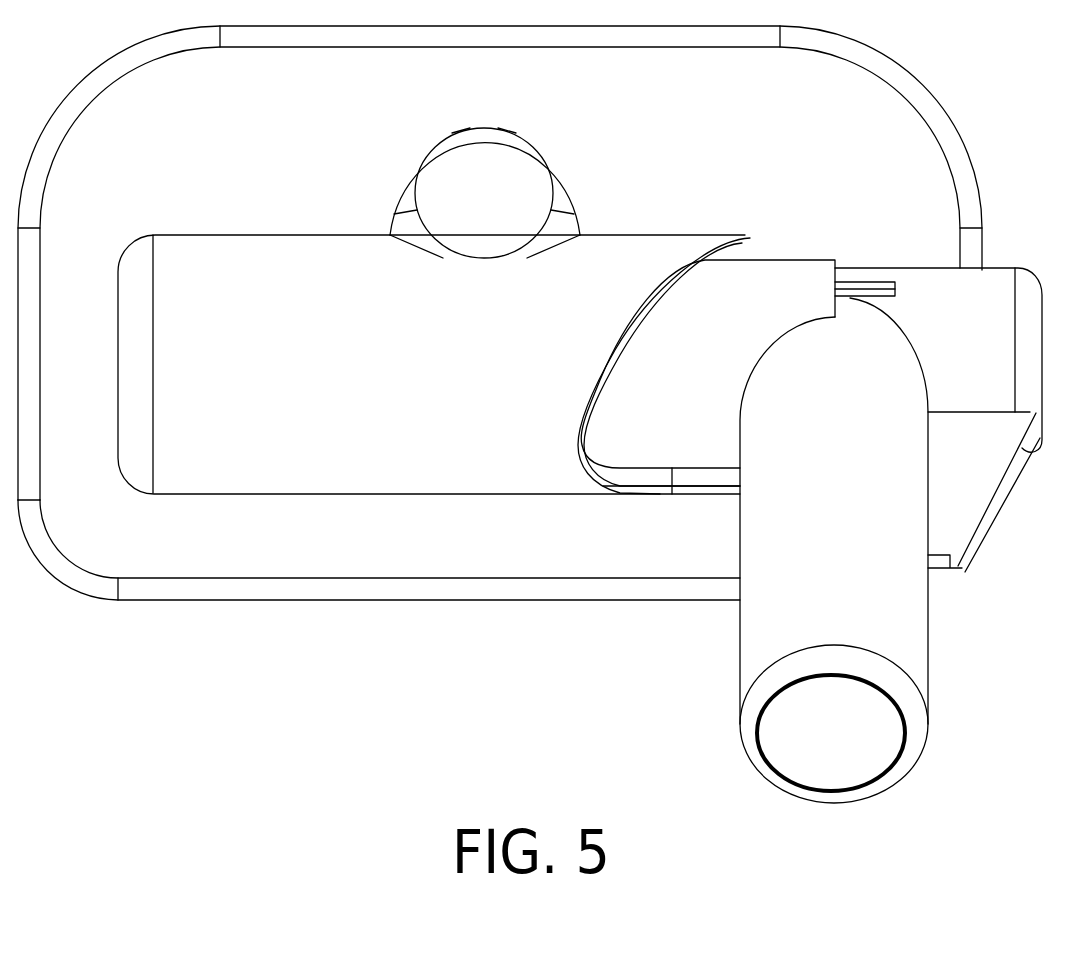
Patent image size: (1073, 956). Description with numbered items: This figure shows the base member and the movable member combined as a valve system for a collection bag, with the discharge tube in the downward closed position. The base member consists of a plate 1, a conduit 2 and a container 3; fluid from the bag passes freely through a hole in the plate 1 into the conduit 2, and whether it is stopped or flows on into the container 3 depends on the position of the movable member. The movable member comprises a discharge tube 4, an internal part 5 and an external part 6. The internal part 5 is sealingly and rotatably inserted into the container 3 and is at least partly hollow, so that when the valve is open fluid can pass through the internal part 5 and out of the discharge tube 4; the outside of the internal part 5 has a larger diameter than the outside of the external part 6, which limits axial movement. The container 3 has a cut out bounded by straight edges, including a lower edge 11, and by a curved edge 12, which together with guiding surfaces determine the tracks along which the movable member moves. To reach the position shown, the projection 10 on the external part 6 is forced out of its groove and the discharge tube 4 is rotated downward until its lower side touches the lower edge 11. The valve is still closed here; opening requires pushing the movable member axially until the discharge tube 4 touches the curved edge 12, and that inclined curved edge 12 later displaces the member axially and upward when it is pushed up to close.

The plate 1 is at (500, 313).
The conduit 2 is at (485, 193).
The container 3 is at (431, 364).
The discharge tube 4 is at (834, 550).
The internal part 5 is at (708, 364).
The external part 6 is at (938, 420).
The projection 10 is at (851, 293).
The lower edge 11 is at (628, 478).
The curved edge 12 is at (585, 400).